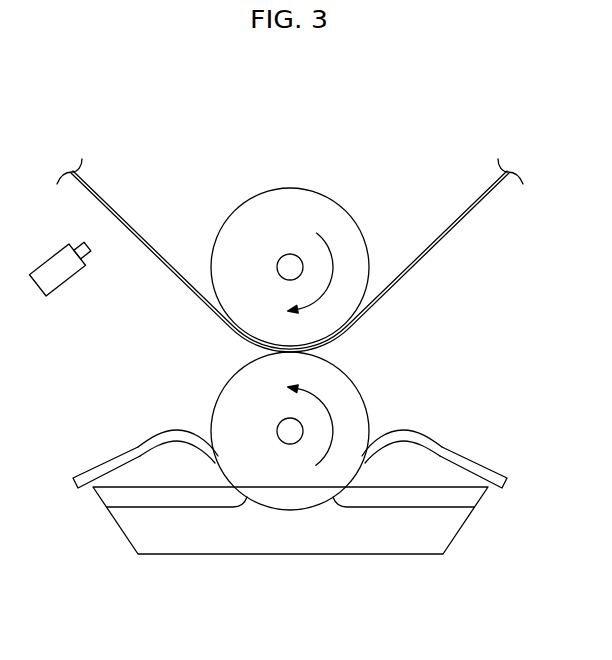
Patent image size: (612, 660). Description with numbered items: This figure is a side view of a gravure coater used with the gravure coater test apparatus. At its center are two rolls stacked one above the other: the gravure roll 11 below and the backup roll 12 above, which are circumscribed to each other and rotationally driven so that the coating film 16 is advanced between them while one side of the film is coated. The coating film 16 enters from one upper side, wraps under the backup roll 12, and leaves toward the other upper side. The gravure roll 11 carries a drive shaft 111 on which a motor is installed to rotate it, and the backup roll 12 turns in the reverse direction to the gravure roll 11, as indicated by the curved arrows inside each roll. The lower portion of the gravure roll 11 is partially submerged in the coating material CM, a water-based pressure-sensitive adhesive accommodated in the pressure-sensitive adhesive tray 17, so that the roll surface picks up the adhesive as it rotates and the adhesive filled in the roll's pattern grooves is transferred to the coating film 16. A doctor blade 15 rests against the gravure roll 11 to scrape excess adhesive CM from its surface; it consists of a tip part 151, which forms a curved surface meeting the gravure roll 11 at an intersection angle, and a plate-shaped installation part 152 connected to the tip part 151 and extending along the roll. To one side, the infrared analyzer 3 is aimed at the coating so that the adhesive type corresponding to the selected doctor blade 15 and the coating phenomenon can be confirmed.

The infrared analyzer 3 is at (62, 279).
The gravure roll 11 is at (237, 383).
The drive shaft 111 is at (287, 430).
The backup roll 12 is at (291, 189).
The doctor blade 15 is at (437, 413).
The tip part 151 is at (415, 434).
The installation part 152 is at (480, 462).
The coating film 16 is at (118, 212).
The pressure-sensitive adhesive tray 17 is at (462, 527).
The coating material CM is at (205, 507).